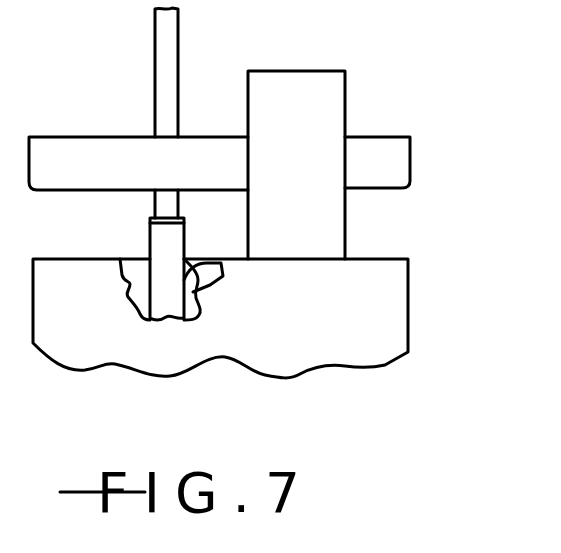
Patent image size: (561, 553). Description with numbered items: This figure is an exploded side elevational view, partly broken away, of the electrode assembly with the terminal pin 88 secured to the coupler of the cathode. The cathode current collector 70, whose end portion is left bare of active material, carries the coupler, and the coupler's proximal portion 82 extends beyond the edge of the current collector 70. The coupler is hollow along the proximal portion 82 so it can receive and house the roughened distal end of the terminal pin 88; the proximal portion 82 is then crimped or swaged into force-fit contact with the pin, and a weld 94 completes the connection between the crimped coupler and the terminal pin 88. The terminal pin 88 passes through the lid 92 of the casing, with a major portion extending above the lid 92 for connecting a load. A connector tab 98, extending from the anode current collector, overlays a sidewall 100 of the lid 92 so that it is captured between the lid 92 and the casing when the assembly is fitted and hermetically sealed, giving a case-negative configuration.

The cathode current collector 70 is at (223, 276).
The proximal portion of the coupler 82 is at (209, 258).
The terminal pin 88 is at (173, 50).
The lid 92 is at (394, 146).
The weld 94 is at (152, 221).
The connector tab 98 is at (328, 84).
The sidewall of the lid 100 is at (392, 177).